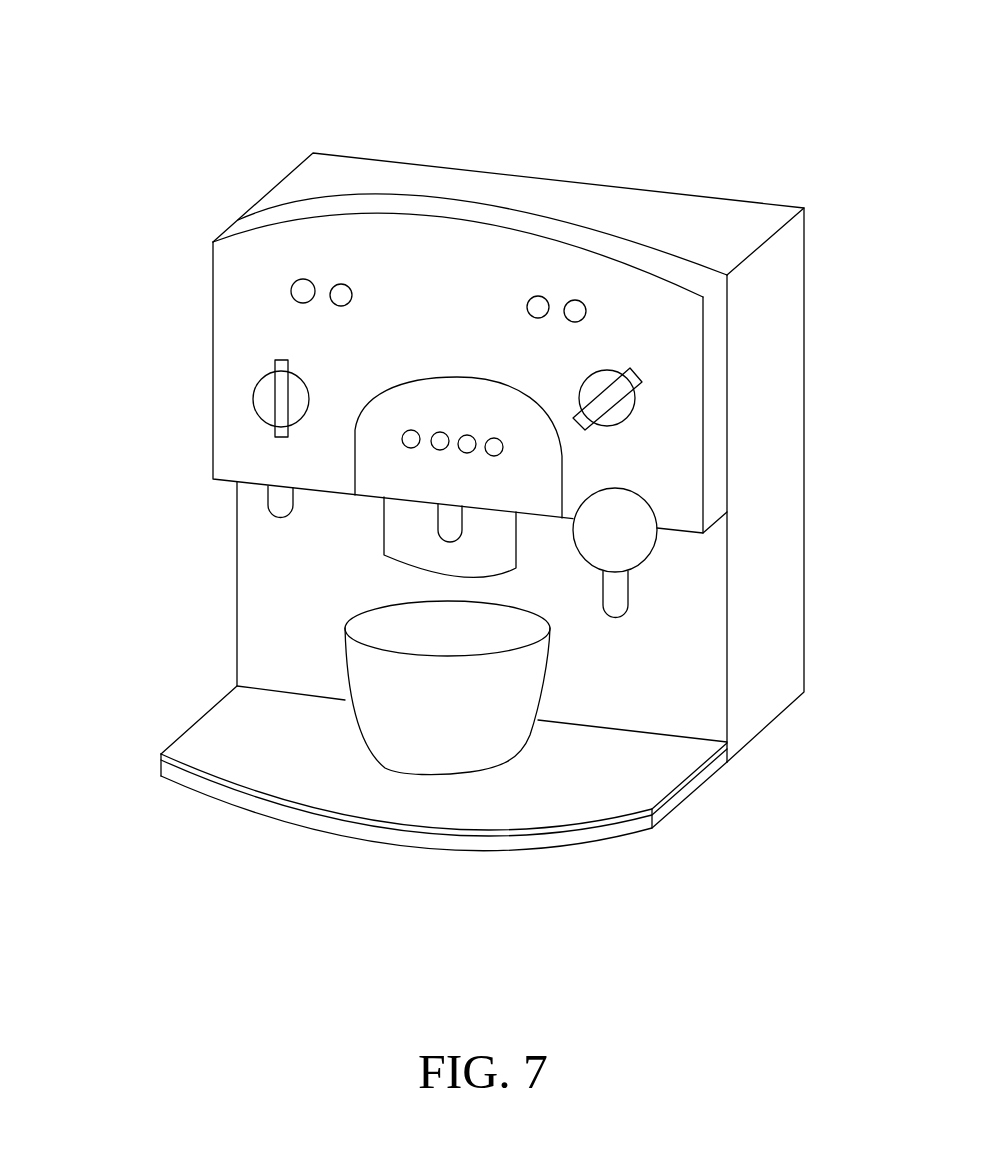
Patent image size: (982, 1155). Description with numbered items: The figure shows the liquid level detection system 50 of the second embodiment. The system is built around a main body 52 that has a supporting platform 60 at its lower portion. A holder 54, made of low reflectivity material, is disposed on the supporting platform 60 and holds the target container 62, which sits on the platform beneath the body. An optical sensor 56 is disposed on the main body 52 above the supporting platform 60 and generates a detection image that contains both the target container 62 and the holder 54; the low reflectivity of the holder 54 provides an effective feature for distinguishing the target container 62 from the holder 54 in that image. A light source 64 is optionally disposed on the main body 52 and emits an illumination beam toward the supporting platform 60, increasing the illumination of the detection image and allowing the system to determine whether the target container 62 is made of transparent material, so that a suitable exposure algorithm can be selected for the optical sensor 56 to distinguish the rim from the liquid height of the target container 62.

The liquid level detection system 50 is at (671, 114).
The main body 52 is at (765, 430).
The holder 54 is at (188, 747).
The optical sensor 56 is at (451, 520).
The supporting platform 60 is at (251, 805).
The target container 62 is at (375, 668).
The light source 64 is at (280, 502).